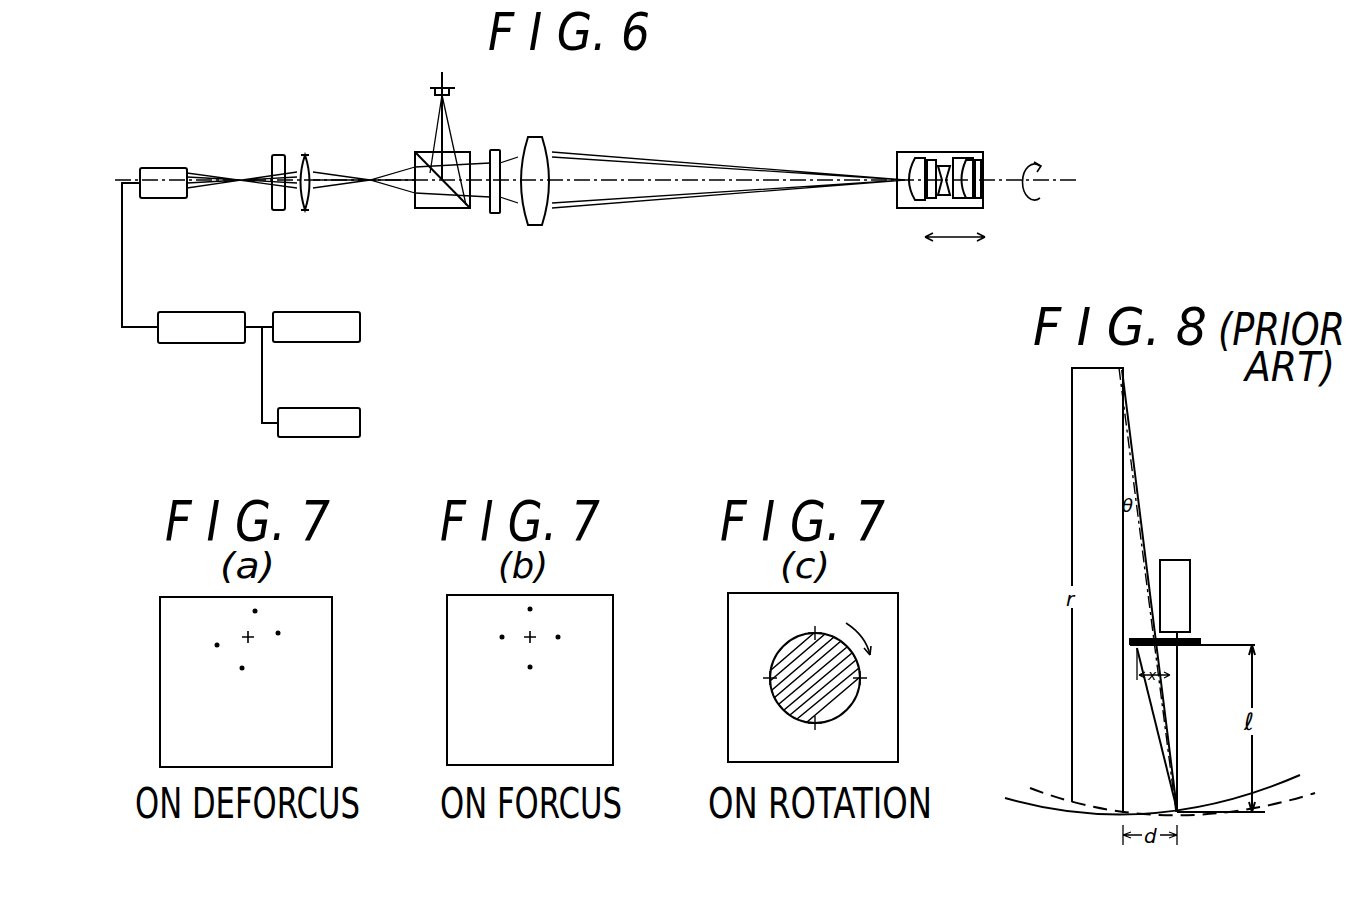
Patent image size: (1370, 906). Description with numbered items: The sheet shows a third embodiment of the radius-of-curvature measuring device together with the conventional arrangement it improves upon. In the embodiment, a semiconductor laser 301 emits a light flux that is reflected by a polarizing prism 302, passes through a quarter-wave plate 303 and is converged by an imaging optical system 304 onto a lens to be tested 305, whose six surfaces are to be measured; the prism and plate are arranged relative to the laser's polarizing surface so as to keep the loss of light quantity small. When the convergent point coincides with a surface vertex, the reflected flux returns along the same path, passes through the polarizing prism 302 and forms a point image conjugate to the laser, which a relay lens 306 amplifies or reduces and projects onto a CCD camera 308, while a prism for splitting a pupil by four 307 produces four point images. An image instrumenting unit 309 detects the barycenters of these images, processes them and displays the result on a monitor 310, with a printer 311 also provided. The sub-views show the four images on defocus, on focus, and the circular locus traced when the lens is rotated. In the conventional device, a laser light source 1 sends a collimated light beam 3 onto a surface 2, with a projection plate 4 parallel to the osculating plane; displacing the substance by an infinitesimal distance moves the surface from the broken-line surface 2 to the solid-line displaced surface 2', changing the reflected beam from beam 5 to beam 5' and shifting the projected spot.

In FIG. 6, the semiconductor laser 301 is at (449, 92).
In FIG. 6, the polarizing prism 302 is at (455, 210).
In FIG. 6, the quarter-wave plate 303 is at (496, 150).
In FIG. 6, the imaging optical system 304 is at (540, 140).
In FIG. 6, the lens to be tested 305 is at (940, 152).
In FIG. 6, the relay lens 306 is at (311, 158).
In FIG. 6, the prism for splitting a pupil by four 307 is at (291, 142).
In FIG. 6, the CCD camera 308 is at (190, 156).
In FIG. 6, the image instrumenting unit 309 is at (240, 302).
In FIG. 6, the monitor 310 is at (355, 302).
In FIG. 6, the printer 311 is at (354, 396).
In FIG. 8, the laser light source 1 is at (1190, 588).
In FIG. 8, the surface to be measured 2 is at (1172, 812).
In FIG. 8, the displaced measuring surface 2' is at (1157, 781).
In FIG. 8, the collimated light beam 3 is at (1180, 650).
In FIG. 8, the projection plate 4 is at (1200, 640).
In FIG. 8, the reflected laser beam 5 is at (1191, 736).
In FIG. 8, the reflected laser beam after displacement 5' is at (1152, 729).